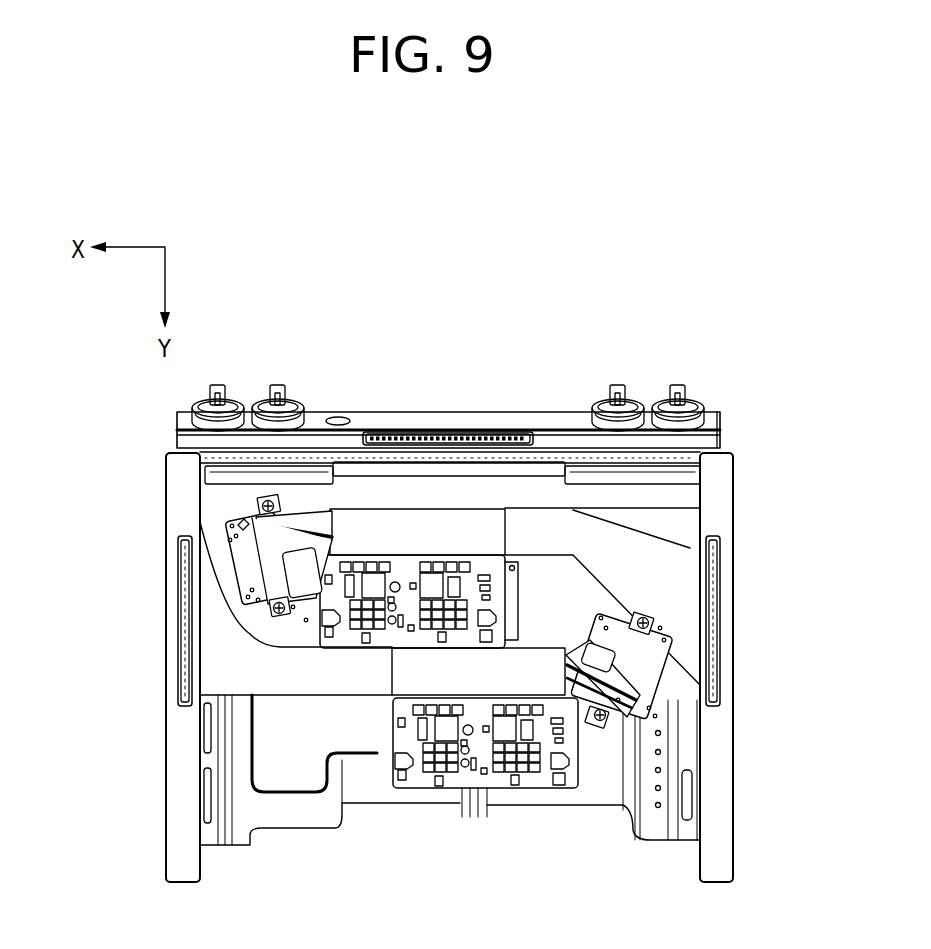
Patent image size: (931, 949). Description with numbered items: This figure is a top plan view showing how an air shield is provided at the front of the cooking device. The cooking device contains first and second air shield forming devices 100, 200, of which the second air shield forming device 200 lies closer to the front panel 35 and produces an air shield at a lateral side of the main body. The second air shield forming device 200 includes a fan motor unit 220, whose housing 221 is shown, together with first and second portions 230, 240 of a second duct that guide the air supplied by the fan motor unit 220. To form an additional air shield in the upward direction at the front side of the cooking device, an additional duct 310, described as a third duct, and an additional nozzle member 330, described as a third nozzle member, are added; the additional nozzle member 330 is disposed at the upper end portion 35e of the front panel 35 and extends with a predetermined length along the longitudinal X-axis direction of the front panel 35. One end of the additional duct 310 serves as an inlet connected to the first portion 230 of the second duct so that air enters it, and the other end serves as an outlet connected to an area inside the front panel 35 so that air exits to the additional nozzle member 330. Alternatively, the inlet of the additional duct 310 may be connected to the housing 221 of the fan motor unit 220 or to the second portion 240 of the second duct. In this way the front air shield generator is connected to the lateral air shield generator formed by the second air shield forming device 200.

The first air shield forming device 100 is at (306, 712).
The second air shield forming device 200 is at (522, 497).
The fan motor unit 220 is at (236, 508).
The housing 221 is at (290, 530).
The first portion of the second duct 230 is at (368, 523).
The second portion of the second duct 240 is at (613, 542).
The additional duct 310 is at (412, 477).
The additional nozzle member 330 is at (458, 422).
The front panel 35 is at (558, 420).
The upper end portion of the front panel 35e is at (572, 443).